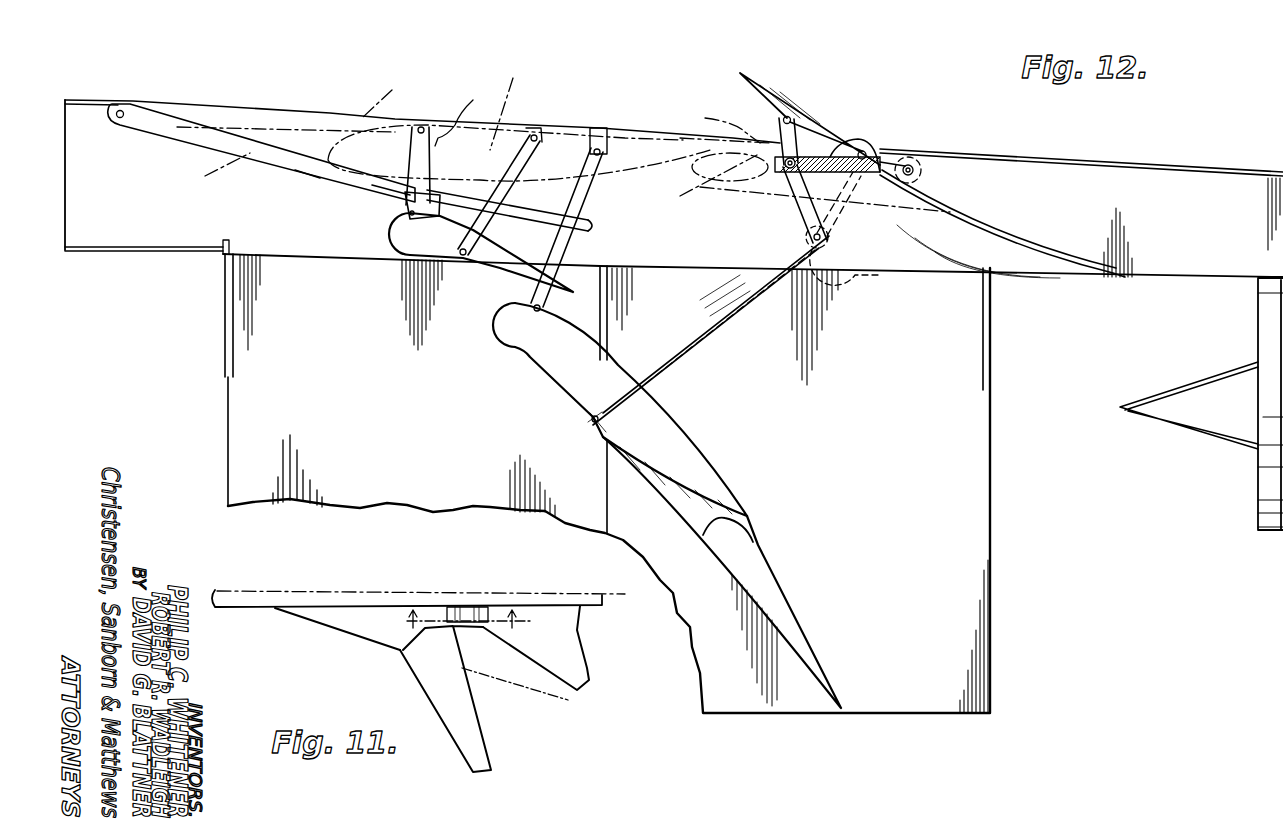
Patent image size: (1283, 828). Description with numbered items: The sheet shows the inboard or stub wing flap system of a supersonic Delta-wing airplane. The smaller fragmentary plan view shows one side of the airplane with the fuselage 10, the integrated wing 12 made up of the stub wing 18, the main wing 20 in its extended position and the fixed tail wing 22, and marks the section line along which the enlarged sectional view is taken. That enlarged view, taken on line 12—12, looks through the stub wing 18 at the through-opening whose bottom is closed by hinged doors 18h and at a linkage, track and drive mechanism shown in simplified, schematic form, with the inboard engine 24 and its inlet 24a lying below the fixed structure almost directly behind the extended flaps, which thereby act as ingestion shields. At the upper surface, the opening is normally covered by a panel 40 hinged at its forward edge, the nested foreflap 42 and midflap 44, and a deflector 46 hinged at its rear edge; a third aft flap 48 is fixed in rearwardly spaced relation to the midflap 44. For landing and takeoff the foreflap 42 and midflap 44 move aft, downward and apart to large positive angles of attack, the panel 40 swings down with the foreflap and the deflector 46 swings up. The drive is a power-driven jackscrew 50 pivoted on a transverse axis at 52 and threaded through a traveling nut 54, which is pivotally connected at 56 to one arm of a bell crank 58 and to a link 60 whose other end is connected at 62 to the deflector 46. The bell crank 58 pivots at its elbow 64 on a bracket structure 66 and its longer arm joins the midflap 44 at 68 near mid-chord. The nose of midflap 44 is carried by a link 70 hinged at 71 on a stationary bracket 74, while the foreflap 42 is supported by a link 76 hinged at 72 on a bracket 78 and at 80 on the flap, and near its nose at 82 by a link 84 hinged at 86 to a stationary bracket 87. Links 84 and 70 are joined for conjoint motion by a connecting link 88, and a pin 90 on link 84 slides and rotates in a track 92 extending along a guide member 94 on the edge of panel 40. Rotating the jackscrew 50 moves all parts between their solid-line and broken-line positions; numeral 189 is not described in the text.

In FIG. 11, the fuselage 10 is at (285, 615).
In FIG. 11, the integrated wing 12 is at (463, 623).
In FIG. 12, the stub wing 18 is at (80, 101).
In FIG. 11, the stub wing 18 is at (371, 640).
In FIG. 12, the hinged doors 18h is at (262, 418).
In FIG. 12, the lower skin lip 189 is at (330, 257).
In FIG. 11, the main wing 20 is at (445, 684).
In FIG. 12, the tail wing 22 is at (1104, 152).
In FIG. 11, the tail wing 22 is at (584, 652).
In FIG. 12, the inboard engine 24 is at (1270, 532).
In FIG. 12, the inboard engine inlet 24a is at (1257, 484).
In FIG. 12, the panel 40 is at (245, 102).
In FIG. 12, the foreflap 42 is at (370, 290).
In FIG. 12, the midflap 44 is at (497, 375).
In FIG. 12, the deflector 46 is at (855, 110).
In FIG. 12, the aft flap 48 is at (768, 570).
In FIG. 12, the jackscrew 50 is at (866, 150).
In FIG. 12, the jackscrew pivot axis 52 is at (912, 166).
In FIG. 12, the traveling nut 54 is at (772, 180).
In FIG. 12, the nut pivot connection 56 is at (793, 195).
In FIG. 12, the bell crank 58 is at (755, 312).
In FIG. 12, the link 60 is at (800, 120).
In FIG. 12, the deflector pivot connection 62 is at (778, 118).
In FIG. 12, the bell crank elbow 64 is at (830, 240).
In FIG. 12, the bracket structure 66 is at (855, 278).
In FIG. 12, the main flap pivot connection 68 is at (590, 424).
In FIG. 12, the link 70 is at (584, 244).
In FIG. 12, the link hinge 71 is at (610, 140).
In FIG. 12, the link hinge 72 is at (594, 140).
In FIG. 12, the stationary bracket 74 is at (598, 144).
In FIG. 12, the link 76 is at (510, 166).
In FIG. 12, the bracket 78 is at (533, 126).
In FIG. 12, the foreflap hinge 80 is at (464, 256).
In FIG. 12, the foreflap nose support 82 is at (404, 218).
In FIG. 12, the link 84 is at (468, 119).
In FIG. 12, the link hinge 86 is at (426, 125).
In FIG. 12, the stationary bracket 87 is at (418, 125).
In FIG. 12, the connecting link 88 is at (525, 220).
In FIG. 12, the pin 90 is at (405, 207).
In FIG. 12, the track 92 is at (370, 188).
In FIG. 12, the guide member 94 is at (290, 178).